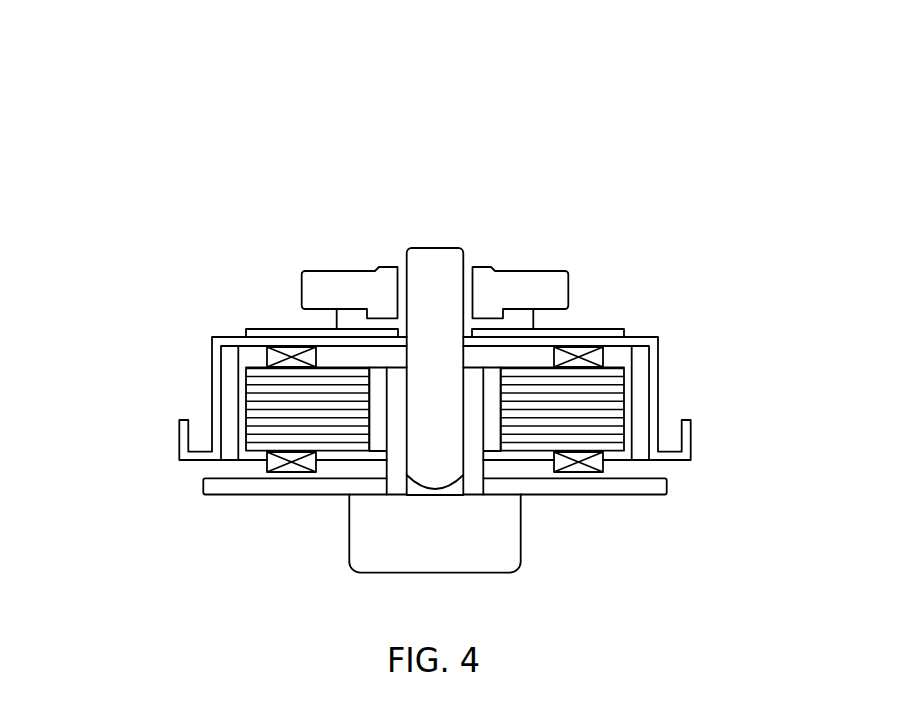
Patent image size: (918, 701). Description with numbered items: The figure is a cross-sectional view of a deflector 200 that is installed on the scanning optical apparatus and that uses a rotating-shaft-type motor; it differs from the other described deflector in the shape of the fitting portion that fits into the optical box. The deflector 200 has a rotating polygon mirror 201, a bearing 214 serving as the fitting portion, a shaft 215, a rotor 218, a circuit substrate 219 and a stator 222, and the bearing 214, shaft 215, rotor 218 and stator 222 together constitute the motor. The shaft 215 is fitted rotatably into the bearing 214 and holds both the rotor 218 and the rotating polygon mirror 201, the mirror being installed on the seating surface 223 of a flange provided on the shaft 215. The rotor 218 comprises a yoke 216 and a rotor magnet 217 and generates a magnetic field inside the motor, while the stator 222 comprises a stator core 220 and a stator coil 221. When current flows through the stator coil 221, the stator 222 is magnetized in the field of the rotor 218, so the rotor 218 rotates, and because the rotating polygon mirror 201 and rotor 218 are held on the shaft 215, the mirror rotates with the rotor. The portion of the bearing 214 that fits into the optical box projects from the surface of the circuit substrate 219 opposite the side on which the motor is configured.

The deflector 200 is at (612, 120).
The rotating polygon mirror 201 is at (545, 280).
The bearing 214 is at (496, 552).
The shaft 215 is at (463, 363).
The yoke 216 is at (655, 373).
The rotor magnet 217 is at (640, 417).
The rotor 218 is at (515, 416).
The circuit substrate 219 is at (637, 492).
The stator core 220 is at (275, 428).
The stator coil 221 is at (270, 360).
The stator 222 is at (325, 401).
The seating surface 223 is at (355, 318).